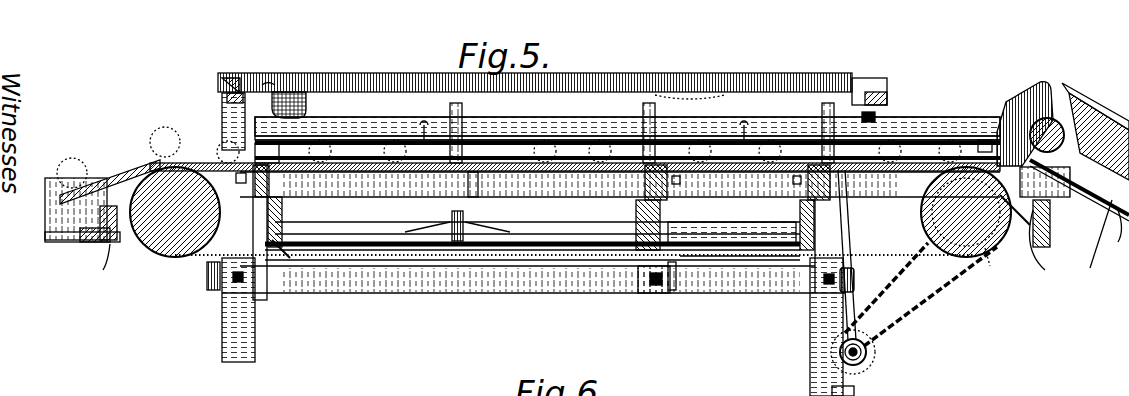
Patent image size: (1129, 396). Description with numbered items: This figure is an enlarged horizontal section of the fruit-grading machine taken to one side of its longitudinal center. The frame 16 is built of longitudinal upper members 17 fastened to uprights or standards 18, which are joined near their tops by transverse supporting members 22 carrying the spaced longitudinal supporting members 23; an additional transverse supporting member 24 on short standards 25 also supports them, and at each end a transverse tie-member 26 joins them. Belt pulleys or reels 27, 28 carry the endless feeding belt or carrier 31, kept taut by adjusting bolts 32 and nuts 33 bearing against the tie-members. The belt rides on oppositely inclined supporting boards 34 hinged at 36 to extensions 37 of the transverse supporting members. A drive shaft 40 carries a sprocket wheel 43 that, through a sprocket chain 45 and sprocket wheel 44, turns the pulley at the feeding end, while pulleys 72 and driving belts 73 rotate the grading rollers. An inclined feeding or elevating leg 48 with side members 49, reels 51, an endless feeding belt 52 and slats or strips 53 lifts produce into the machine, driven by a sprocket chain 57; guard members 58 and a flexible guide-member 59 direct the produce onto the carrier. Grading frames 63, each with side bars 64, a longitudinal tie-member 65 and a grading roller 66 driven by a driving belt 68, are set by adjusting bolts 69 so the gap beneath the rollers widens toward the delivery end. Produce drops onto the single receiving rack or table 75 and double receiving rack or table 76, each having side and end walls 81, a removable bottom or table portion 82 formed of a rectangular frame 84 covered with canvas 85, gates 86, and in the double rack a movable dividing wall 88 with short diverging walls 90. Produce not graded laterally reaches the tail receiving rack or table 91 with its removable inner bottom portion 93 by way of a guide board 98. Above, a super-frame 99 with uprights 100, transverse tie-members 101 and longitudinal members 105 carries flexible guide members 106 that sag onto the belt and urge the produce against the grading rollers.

The frame 16 is at (812, 296).
The longitudinally-disposed upper members 17 is at (510, 282).
The uprights or standards 18 is at (255, 342).
The transverse supporting members 22 is at (253, 220).
The longitudinal supporting members 23 is at (566, 186).
The transverse supporting member 24 is at (668, 208).
The short standards 25 is at (655, 290).
The transverse tie-member 26 is at (103, 244).
The belt pulley or reel 27 is at (995, 245).
The belt pulley or reel 28 is at (158, 250).
The endless feeding belt or carrier 31 is at (478, 165).
The adjusting bolts 32 is at (108, 272).
The nuts 33 is at (95, 212).
The supporting boards 34 is at (470, 184).
The hinge or pivot 36 is at (509, 182).
The extensions 37 is at (272, 185).
The drive shaft 40 is at (864, 364).
The sprocket wheel 43 is at (866, 338).
The sprocket wheel 44 is at (994, 297).
The sprocket chain 45 is at (925, 305).
The inclined feeding or elevating leg 48 is at (1122, 100).
The side members 49 is at (1065, 175).
The reel 51 is at (1050, 117).
The endless feeding belt 52 is at (1095, 242).
The slats or strips 53 is at (1118, 236).
The sprocket chain 57 is at (1045, 182).
The guard members 58 is at (1030, 105).
The flexible guide-member 59 is at (985, 138).
The grading frames 63 is at (335, 140).
The side bars 64 is at (455, 118).
The longitudinal tie-member 65 is at (620, 184).
The grading roller 66 is at (395, 130).
The driving belt 68 is at (425, 160).
The adjusting bolts 69 is at (310, 140).
The pulley 72 is at (856, 389).
The driving belt 73 is at (886, 278).
The single receiving rack or table 75 is at (735, 258).
The double receiving rack or table 76 is at (424, 262).
The side and end walls 81 is at (282, 210).
The removable bottom or table portion 82 is at (486, 250).
The rectangular frame 84 is at (292, 258).
The canvas 85 is at (360, 254).
The movable wall or gate 86 is at (352, 236).
The movable dividing wall 88 is at (452, 215).
The short diverging walls 90 is at (430, 228).
The receiving rack or table 91 is at (62, 244).
The removable inner bottom portion 93 is at (84, 245).
The guide board 98 is at (110, 186).
The super-frame 99 is at (272, 84).
The uprights 100 is at (232, 113).
The transverse tie-members 101 is at (236, 80).
The longitudinal members 105 is at (290, 78).
The flexible guide members 106 is at (686, 94).